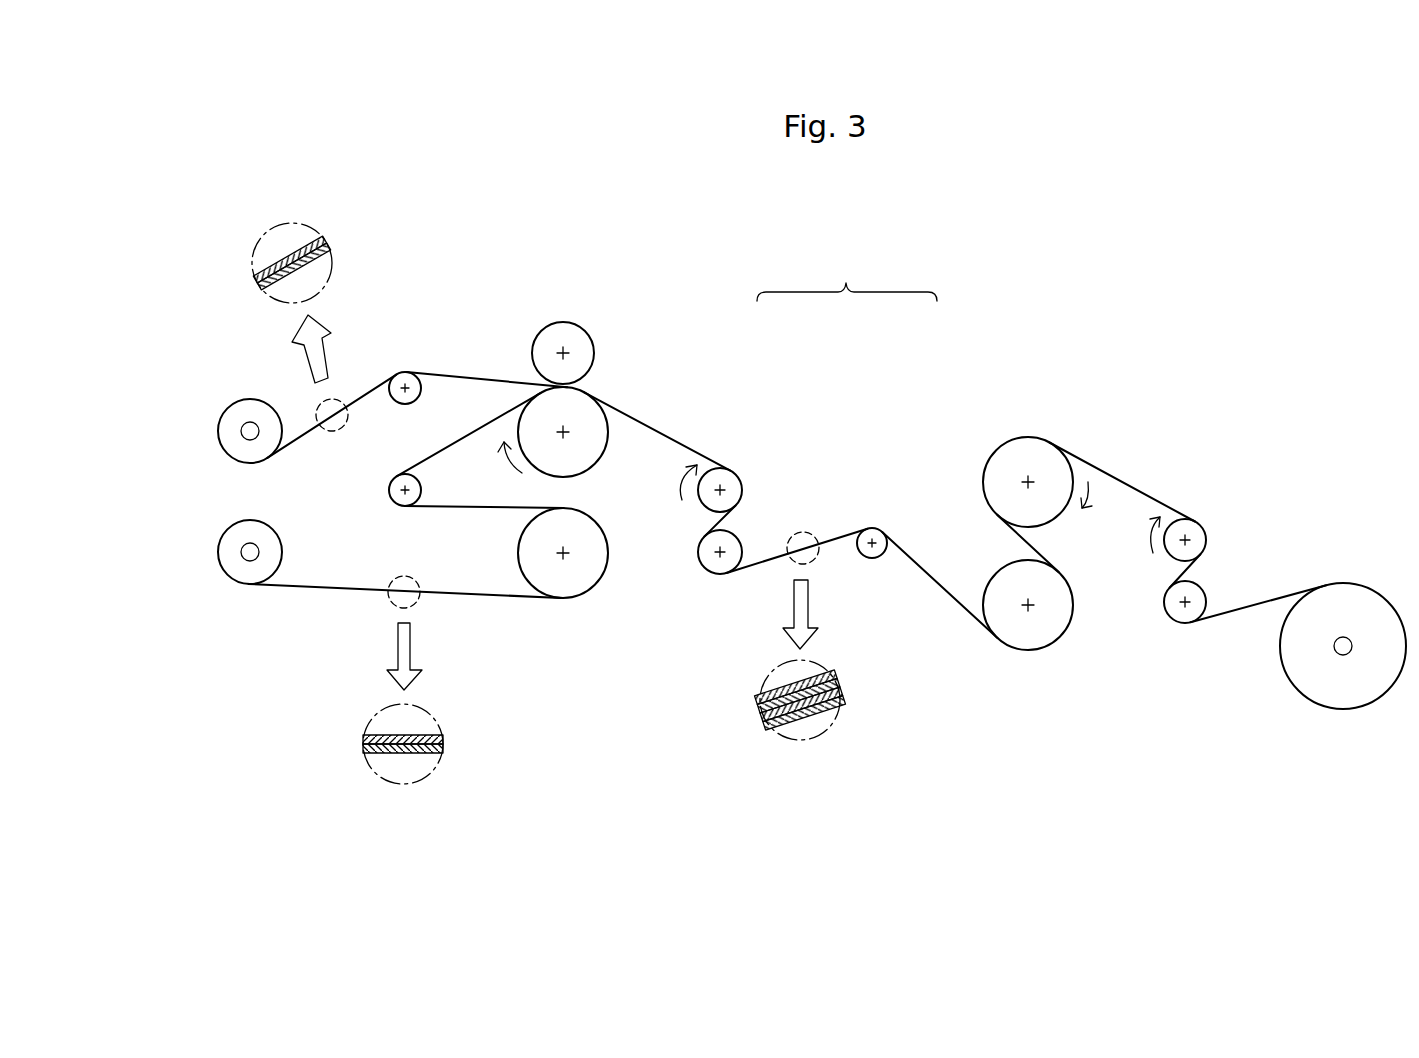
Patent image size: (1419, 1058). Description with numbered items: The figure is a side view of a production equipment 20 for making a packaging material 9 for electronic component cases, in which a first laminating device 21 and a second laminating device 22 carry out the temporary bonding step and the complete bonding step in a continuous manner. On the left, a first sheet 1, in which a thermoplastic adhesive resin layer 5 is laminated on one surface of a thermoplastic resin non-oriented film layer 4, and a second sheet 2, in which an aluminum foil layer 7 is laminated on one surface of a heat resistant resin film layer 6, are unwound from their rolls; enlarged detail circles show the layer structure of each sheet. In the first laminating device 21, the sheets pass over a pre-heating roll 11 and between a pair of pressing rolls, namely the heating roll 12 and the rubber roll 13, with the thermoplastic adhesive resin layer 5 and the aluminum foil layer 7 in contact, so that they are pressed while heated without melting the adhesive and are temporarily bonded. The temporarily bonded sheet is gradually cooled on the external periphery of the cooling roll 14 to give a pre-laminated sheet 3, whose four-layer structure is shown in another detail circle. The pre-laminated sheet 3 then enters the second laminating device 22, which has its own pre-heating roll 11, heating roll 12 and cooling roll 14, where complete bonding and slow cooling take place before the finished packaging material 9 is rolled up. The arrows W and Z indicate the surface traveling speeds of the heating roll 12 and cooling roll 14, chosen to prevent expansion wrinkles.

The first sheet 1 is at (304, 428).
The second sheet 2 is at (305, 591).
The pre-laminated sheet 3 is at (762, 553).
The thermoplastic resin non-oriented film layer 4 is at (305, 244).
The thermoplastic adhesive resin layer 5 is at (312, 258).
The heat resistant resin film layer 6 is at (418, 757).
The aluminum foil layer 7 is at (414, 740).
The packaging material 9 is at (1262, 602).
The pre-heating roll 11 is at (580, 577).
The heating roll 12 is at (590, 460).
The rubber roll 13 is at (580, 328).
The cooling roll 14 is at (706, 508).
The production equipment 20 is at (847, 275).
The first laminating device 21 is at (746, 390).
The second laminating device 22 is at (950, 388).